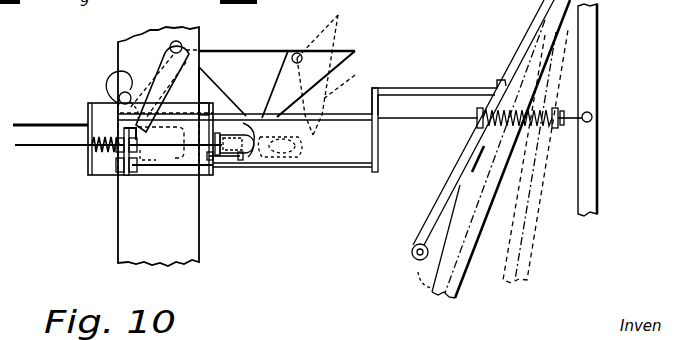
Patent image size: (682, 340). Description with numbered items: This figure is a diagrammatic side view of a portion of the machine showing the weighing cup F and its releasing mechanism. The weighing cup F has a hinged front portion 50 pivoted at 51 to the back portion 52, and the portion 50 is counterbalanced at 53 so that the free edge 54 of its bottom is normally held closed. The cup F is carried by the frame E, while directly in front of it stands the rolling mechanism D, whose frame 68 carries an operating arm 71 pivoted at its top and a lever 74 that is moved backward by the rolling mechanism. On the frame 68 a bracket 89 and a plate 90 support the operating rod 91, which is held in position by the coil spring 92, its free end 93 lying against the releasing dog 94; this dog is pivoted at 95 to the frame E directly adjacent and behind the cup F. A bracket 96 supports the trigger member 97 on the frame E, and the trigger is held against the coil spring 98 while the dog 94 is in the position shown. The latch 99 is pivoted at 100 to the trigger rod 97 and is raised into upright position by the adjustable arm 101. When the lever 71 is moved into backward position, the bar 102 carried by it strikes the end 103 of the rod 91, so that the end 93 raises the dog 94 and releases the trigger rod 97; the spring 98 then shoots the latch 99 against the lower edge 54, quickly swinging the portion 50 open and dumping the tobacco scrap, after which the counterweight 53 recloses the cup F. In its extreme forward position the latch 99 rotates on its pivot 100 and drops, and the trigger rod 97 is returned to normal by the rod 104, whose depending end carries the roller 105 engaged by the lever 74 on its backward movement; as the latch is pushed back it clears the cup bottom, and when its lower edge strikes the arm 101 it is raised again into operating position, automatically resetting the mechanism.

The hinged front portion 50 is at (327, 68).
The pivot 51 is at (297, 53).
The back portion 52 is at (246, 60).
The counterbalance 53 is at (352, 52).
The free edge 54 is at (313, 135).
The frame 68 is at (546, 17).
The operating arm 71 is at (592, 180).
The lever 74 is at (448, 268).
The support or bracket 89 is at (426, 88).
The plate 90 is at (482, 152).
The operating rod 91 is at (400, 118).
The coil spring 92 is at (542, 125).
The free end 93 is at (167, 97).
The releasing dog 94 is at (158, 96).
The pivot 95 is at (177, 41).
The bracket 96 is at (102, 172).
The trigger member 97 is at (157, 148).
The coil spring 98 is at (100, 157).
The latch 99 is at (244, 150).
The pivot 100 is at (245, 160).
The adjustable arm 101 is at (232, 163).
The bar 102 is at (594, 116).
The end 103 is at (566, 114).
The rod 104 is at (337, 165).
The roller 105 is at (412, 251).
The rolling mechanism D is at (586, 22).
The frame E is at (128, 237).
The weighing cup F is at (263, 60).